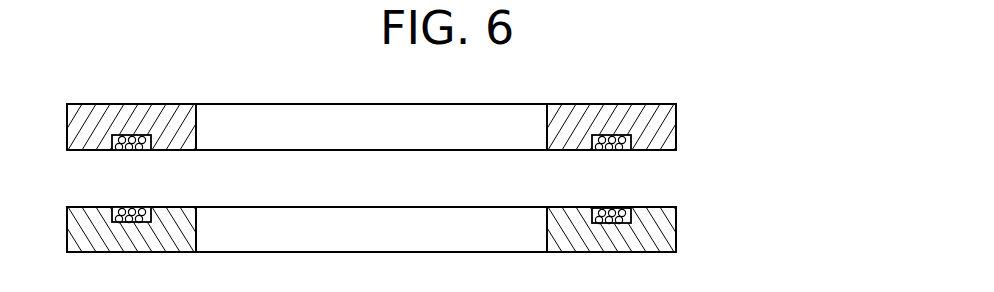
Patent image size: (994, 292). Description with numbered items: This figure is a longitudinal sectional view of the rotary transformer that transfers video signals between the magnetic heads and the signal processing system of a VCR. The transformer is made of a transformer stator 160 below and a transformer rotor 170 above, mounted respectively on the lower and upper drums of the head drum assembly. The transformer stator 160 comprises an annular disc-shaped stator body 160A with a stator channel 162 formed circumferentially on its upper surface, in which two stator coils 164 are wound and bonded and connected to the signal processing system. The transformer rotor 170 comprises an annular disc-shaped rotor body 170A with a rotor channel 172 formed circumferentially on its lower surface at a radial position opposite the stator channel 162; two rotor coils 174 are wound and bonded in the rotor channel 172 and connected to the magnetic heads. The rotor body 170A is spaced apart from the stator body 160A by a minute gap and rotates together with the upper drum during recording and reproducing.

The transformer rotor 170 is at (451, 137).
The rotor body 170A is at (413, 137).
The rotor coils 174 is at (652, 142).
The rotor channel 172 is at (638, 150).
The transformer stator 160 is at (451, 224).
The stator body 160A is at (413, 224).
The stator coils 164 is at (652, 222).
The stator channel 162 is at (637, 211).